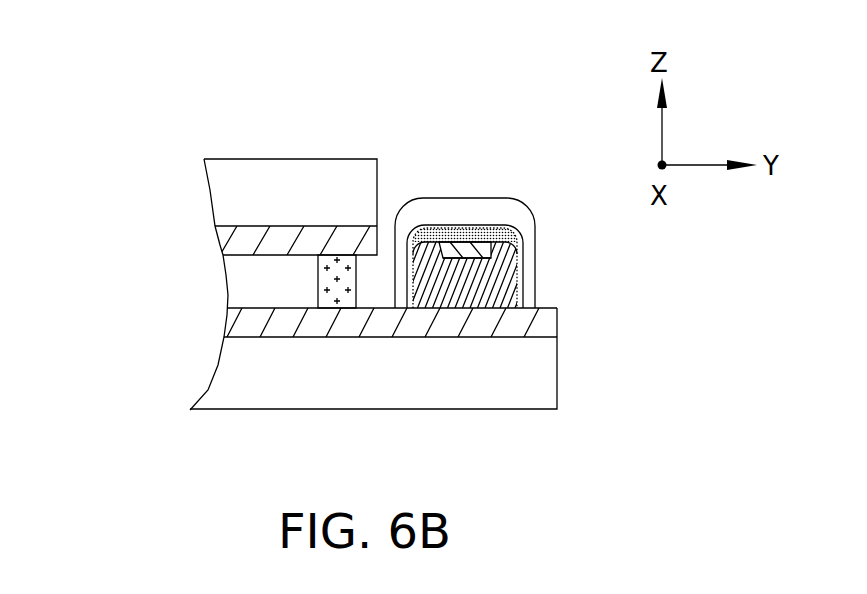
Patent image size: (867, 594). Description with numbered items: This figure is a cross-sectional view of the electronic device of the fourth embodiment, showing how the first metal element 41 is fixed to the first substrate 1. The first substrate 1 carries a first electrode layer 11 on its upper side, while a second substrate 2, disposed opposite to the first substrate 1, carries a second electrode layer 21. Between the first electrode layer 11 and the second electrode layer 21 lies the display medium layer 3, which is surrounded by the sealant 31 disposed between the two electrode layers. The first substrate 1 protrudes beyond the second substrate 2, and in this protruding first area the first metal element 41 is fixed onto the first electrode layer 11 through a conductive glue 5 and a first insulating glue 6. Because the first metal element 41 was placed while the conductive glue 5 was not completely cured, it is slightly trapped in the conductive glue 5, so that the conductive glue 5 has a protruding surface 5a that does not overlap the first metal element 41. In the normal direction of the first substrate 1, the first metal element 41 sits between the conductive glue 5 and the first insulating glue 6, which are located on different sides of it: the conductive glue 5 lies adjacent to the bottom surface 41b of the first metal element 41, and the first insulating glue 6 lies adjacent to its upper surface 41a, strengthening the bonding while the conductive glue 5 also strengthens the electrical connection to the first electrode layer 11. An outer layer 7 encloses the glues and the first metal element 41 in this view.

The first substrate 1 is at (352, 358).
The first electrode layer 11 is at (242, 322).
The second substrate 2 is at (268, 207).
The second electrode layer 21 is at (232, 242).
The display medium layer 3 is at (244, 285).
The sealant 31 is at (318, 292).
The conductive glue 5 is at (495, 284).
The protruding surface 5a is at (507, 228).
The first insulating glue 6 is at (522, 234).
The second protective layer 7 is at (522, 214).
The first metal element 41 is at (490, 254).
The upper surface 41a is at (460, 229).
The bottom surface 41b is at (458, 258).